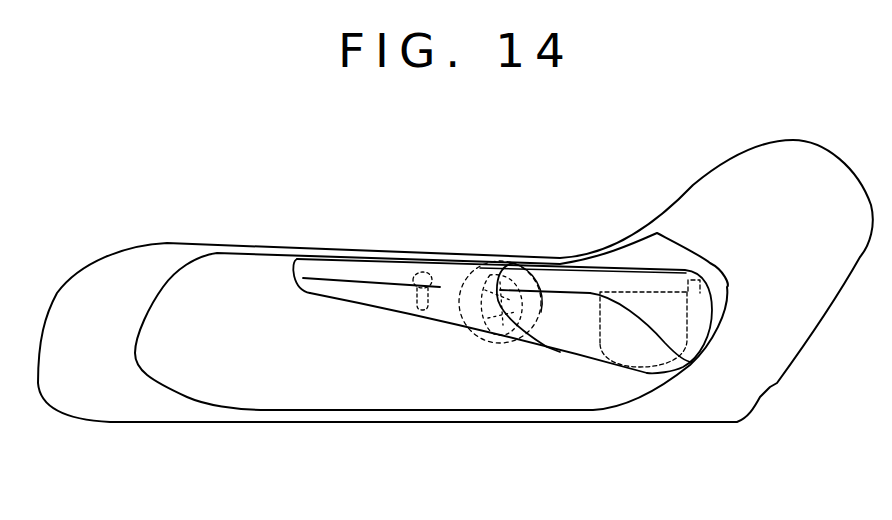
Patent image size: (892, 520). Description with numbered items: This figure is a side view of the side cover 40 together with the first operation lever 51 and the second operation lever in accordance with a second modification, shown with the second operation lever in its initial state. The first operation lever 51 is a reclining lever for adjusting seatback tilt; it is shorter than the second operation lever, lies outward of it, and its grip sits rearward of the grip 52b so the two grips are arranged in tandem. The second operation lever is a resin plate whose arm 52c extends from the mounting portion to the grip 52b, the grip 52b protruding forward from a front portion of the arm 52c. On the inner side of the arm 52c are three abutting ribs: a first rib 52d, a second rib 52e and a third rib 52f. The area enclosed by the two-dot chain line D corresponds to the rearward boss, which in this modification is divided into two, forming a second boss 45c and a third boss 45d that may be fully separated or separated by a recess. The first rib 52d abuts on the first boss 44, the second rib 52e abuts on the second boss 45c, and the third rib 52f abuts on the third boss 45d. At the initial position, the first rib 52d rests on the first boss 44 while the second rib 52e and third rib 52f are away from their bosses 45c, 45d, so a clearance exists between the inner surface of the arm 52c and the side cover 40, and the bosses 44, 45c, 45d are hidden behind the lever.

The side cover 40 is at (215, 268).
The first boss 44 is at (418, 273).
The second boss 45c is at (483, 320).
The third boss 45d is at (520, 262).
The first operation lever 51 is at (640, 308).
The grip 52b is at (357, 272).
The arm 52c is at (383, 297).
The first rib 52d is at (430, 272).
The second rib 52e is at (497, 265).
The third rib 52f is at (505, 335).
The two-dot chain line D is at (503, 260).